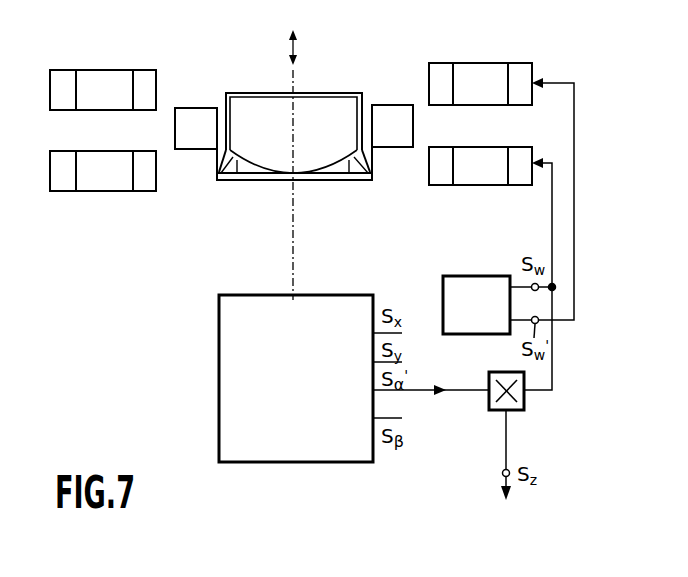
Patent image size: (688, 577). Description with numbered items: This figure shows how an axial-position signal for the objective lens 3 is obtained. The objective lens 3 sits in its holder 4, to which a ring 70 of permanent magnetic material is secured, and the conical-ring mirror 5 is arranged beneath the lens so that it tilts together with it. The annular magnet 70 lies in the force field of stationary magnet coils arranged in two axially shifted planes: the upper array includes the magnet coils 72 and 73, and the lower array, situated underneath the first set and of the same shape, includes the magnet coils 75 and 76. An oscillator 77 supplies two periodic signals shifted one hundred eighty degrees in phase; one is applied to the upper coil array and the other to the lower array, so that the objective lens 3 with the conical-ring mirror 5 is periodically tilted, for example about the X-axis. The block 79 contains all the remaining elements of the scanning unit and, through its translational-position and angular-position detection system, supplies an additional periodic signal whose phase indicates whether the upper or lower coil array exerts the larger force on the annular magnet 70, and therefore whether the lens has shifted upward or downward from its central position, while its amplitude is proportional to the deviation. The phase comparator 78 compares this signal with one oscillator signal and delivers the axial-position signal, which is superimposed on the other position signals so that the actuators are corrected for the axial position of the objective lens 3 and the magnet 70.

The objective lens 3 is at (270, 152).
The holder 4 is at (223, 152).
The conical-ring mirror 5 is at (230, 178).
The ring of permanent magnetic material 70 is at (188, 143).
The magnet coil 72 is at (438, 76).
The magnet coil 73 is at (143, 80).
The magnet coil 75 is at (444, 175).
The magnet coil 76 is at (144, 180).
The oscillator 77 is at (484, 320).
The phase comparator 78 is at (513, 409).
The block 79 is at (351, 445).